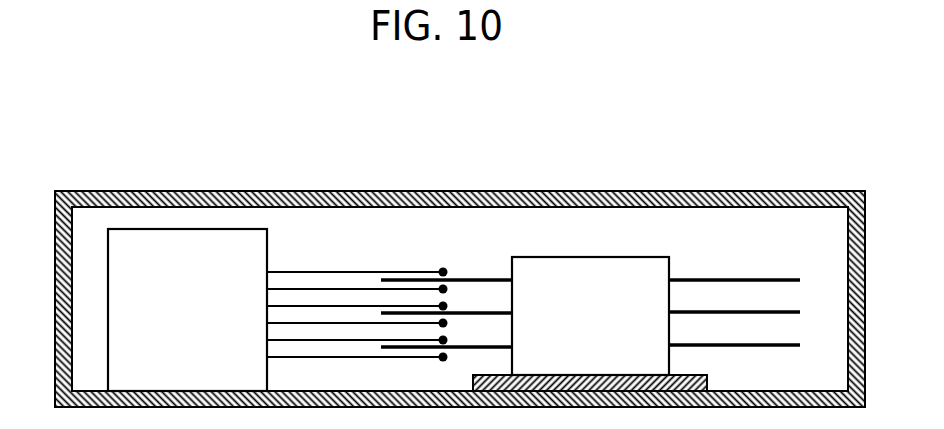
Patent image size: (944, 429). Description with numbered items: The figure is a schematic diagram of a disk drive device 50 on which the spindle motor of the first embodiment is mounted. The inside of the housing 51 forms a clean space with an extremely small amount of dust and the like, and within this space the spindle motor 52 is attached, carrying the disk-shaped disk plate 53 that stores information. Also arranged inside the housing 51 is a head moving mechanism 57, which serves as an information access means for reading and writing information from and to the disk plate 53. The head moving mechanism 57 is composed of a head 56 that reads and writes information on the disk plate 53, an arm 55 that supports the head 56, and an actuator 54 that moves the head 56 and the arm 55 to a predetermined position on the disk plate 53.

The disk drive device 50 is at (570, 86).
The housing 51 is at (669, 200).
The spindle motor 52 is at (612, 280).
The disk plate 53 is at (767, 310).
The actuator 54 is at (182, 260).
The arm 55 is at (332, 288).
The head 56 is at (463, 247).
The head moving mechanism 57 is at (312, 223).